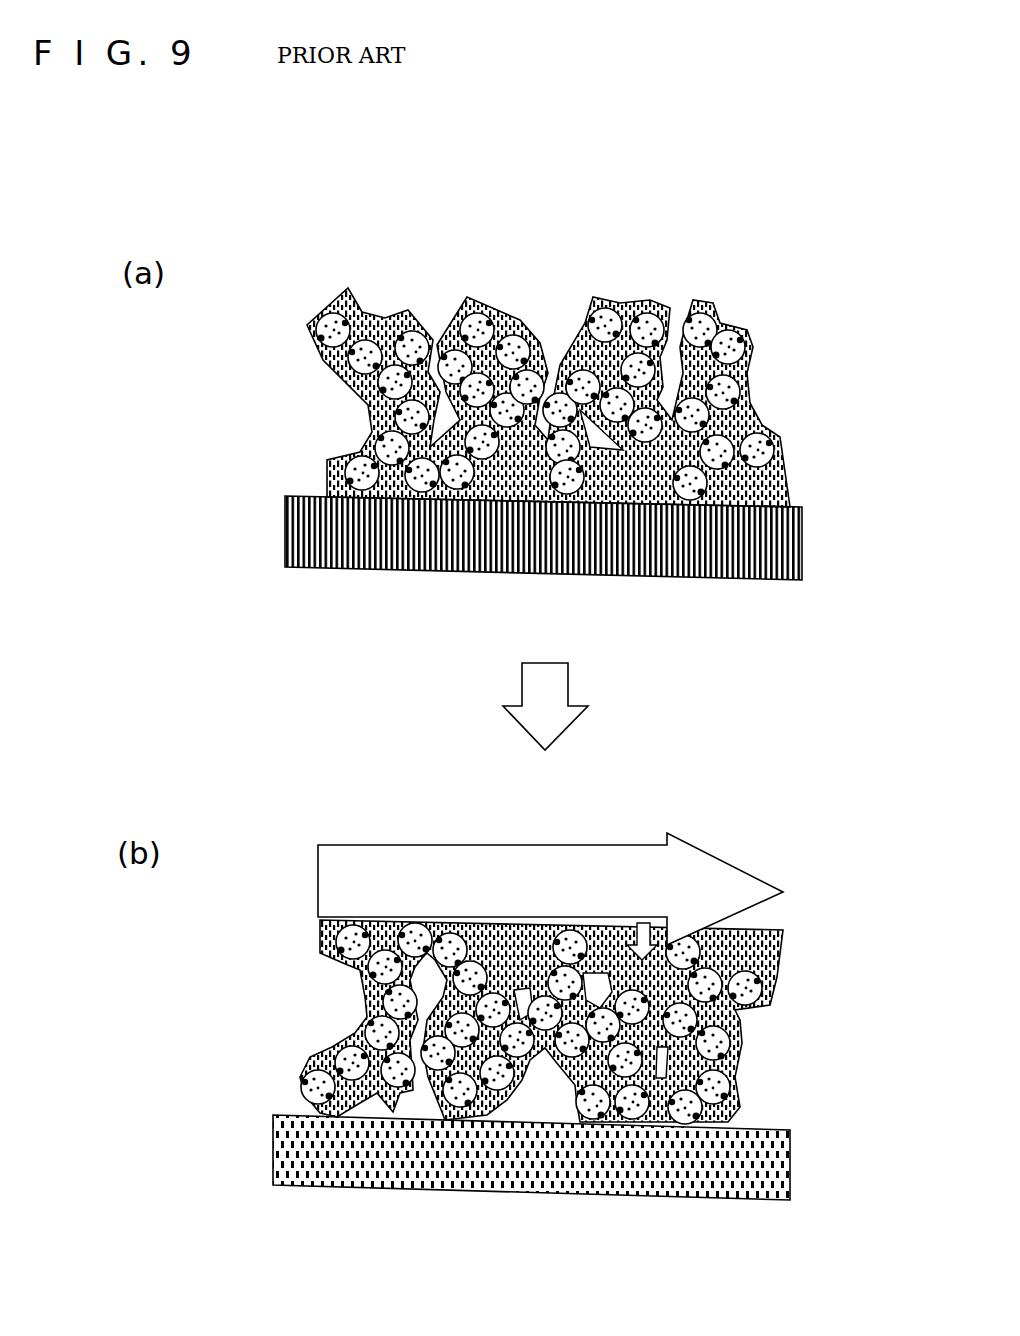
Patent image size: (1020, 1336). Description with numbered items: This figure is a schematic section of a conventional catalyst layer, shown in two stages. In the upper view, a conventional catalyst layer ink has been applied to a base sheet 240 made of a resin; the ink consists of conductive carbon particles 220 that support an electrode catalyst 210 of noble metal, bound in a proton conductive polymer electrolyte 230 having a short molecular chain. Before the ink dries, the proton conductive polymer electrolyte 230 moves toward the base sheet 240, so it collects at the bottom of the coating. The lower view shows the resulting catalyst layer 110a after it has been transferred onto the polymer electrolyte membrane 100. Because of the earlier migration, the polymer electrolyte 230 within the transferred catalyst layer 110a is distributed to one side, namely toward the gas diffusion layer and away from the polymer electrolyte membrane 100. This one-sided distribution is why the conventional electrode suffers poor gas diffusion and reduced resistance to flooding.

The electrode catalyst 210 is at (487, 315).
The conductive carbon particles 220 is at (652, 313).
The proton conductive polymer electrolyte 230 is at (585, 372).
The base sheet 240 is at (752, 581).
The polymer electrolyte membrane 100 is at (325, 1166).
The catalyst layer 110a is at (790, 925).